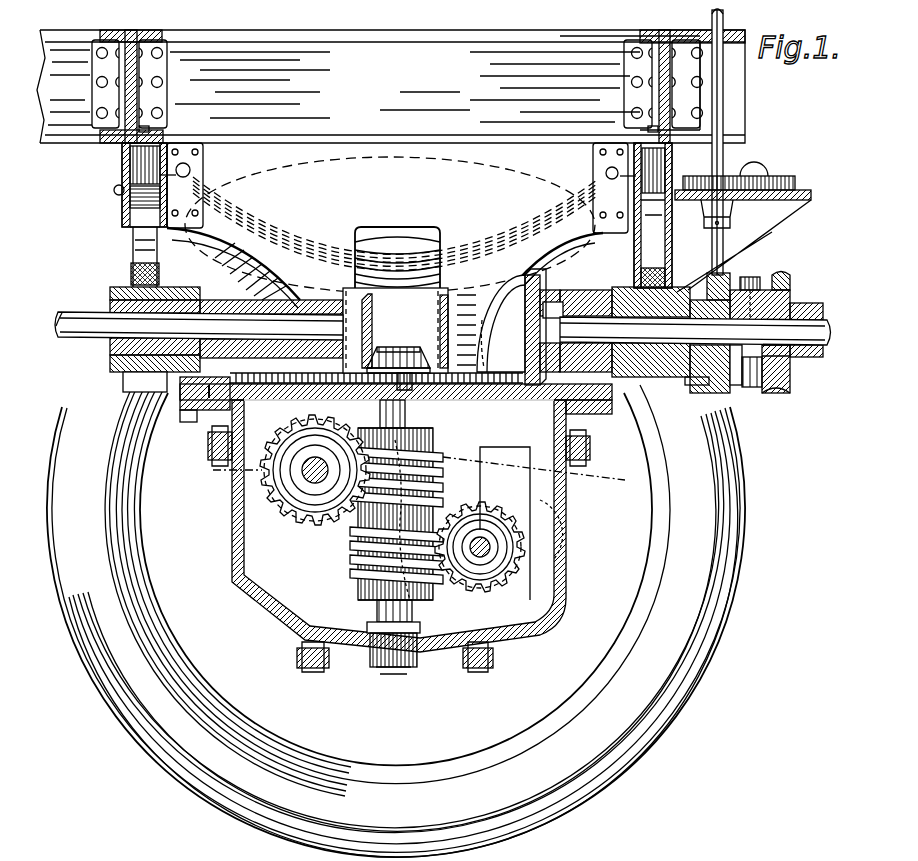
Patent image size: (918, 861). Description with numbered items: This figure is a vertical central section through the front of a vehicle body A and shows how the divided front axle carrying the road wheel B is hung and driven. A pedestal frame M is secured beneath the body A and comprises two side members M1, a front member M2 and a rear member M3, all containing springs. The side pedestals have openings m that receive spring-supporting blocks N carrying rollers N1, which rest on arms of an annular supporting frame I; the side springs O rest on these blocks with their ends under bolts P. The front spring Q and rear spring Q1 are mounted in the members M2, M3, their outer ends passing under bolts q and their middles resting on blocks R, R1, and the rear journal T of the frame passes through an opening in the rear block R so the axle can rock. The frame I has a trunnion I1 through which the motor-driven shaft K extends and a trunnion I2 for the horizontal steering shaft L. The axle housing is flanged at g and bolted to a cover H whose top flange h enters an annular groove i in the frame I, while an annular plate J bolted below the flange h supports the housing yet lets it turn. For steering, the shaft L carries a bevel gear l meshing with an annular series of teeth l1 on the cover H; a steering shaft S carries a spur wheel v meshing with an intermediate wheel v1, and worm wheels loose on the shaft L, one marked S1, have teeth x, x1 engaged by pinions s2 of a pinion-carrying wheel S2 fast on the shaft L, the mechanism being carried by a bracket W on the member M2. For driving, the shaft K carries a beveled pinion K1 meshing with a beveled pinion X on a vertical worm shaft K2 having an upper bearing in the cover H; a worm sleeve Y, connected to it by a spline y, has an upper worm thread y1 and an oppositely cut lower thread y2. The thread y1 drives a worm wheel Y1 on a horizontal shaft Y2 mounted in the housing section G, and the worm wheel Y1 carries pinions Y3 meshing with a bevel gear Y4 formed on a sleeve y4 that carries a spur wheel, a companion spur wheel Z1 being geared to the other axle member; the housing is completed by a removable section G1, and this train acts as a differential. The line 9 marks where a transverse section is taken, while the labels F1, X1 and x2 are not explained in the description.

The vehicle body A is at (391, 86).
The road wheel B is at (396, 617).
The pedestal frame M is at (120, 168).
The bolts q is at (114, 192).
The rear member of pedestal frame M3 is at (133, 238).
The rear spring Q1 is at (133, 252).
The bolts P is at (203, 170).
The front member of pedestal frame M2 is at (608, 135).
The front spring Q is at (653, 215).
The side members of pedestal frame M1 is at (418, 162).
The side springs O is at (486, 232).
The openings m is at (395, 258).
The rear spring-supporting block R is at (130, 347).
The annular supporting frame I is at (650, 392).
The annular groove i is at (170, 395).
The top flange h is at (190, 410).
The trunnion I1 is at (290, 310).
The annular plate J is at (208, 420).
The spring-supporting blocks N is at (409, 339).
The beveled pinion K1 is at (405, 327).
The beveled pinion X is at (410, 350).
The rollers N1 is at (385, 350).
The bevel gear l is at (525, 312).
The trunnion I2 is at (578, 290).
The annular series of teeth l1 is at (493, 344).
The teeth x is at (733, 392).
The worm wheel S1 is at (792, 302).
The pinion-carrying wheel S2 is at (782, 272).
The pinions s2 is at (755, 276).
The sleeve x2 is at (758, 398).
The teeth x1 is at (784, 378).
The horizontal shaft L is at (825, 347).
The motor-driven shaft K is at (74, 318).
The journal T is at (118, 346).
The steering shaft S is at (725, 116).
The intermediate wheel v1 is at (772, 175).
The spur wheel v is at (710, 176).
The bracket W is at (805, 192).
The front spring-supporting block R1 is at (700, 282).
The flanged cover H is at (399, 526).
The flange g is at (205, 450).
The section line 9 is at (180, 470).
The bolt F1 is at (352, 655).
The worm shaft X1 is at (409, 511).
The worm thread y1 is at (440, 460).
The worm shaft K2 is at (395, 676).
The worm sleeve Y is at (318, 497).
The worm wheel Y1 is at (300, 470).
The horizontal shaft Y2 is at (525, 665).
The removable housing section G is at (285, 512).
The pinions Y3 is at (590, 562).
The bevel gear Y4 is at (600, 595).
The sleeve y4 is at (358, 536).
The spur wheel Z1 is at (574, 625).
The removable housing section G1 is at (560, 528).
The worm thread y2 is at (352, 572).
The spline y is at (380, 614).